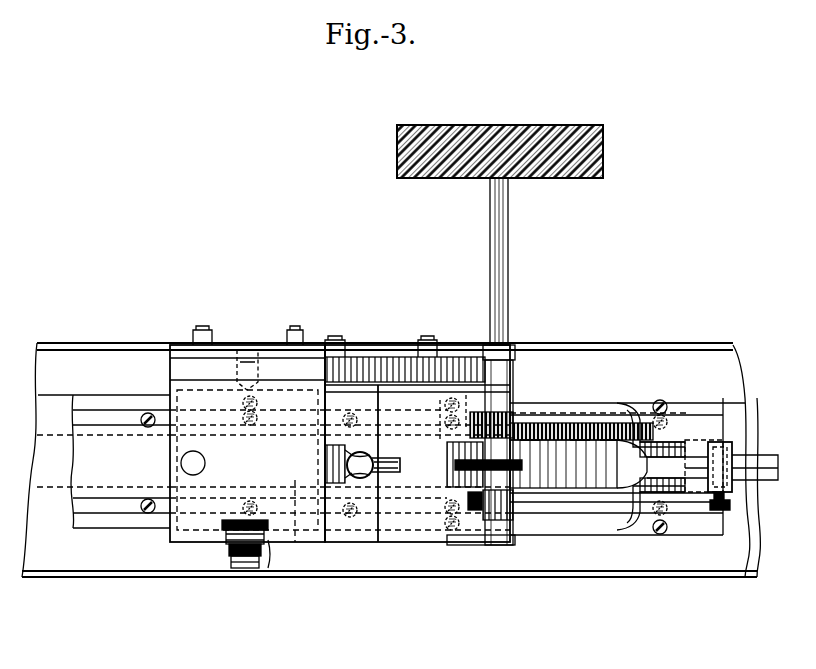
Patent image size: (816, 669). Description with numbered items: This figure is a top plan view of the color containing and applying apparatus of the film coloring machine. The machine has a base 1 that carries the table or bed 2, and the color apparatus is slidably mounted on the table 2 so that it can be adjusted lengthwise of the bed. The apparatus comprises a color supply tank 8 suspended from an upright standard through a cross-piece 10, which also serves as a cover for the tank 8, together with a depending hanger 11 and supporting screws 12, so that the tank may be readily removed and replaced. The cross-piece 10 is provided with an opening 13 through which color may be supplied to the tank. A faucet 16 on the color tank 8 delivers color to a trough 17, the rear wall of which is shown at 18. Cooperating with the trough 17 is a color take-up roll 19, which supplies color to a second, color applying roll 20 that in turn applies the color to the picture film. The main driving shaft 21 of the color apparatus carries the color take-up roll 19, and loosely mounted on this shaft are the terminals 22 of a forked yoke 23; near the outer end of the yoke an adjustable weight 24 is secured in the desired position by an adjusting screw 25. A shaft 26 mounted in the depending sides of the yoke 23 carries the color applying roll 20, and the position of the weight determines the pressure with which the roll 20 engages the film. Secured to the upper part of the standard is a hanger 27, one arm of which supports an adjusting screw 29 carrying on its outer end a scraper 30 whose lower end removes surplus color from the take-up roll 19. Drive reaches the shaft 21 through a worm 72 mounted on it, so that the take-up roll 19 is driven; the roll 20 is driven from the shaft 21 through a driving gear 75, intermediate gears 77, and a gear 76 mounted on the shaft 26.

The base 1 is at (82, 557).
The table 2 is at (113, 400).
The color supply tank 8 is at (300, 480).
The cross-piece 10 is at (202, 507).
The depending hanger 11 is at (270, 555).
The supporting screws 12 is at (246, 352).
The opening 13 is at (205, 465).
The faucet 16 is at (355, 480).
The trough 17 is at (428, 470).
The rear wall 18 is at (380, 520).
The color take-up roll 19 is at (465, 495).
The color applying roll 20 is at (578, 470).
The main driving shaft 21 is at (497, 258).
The terminals 22 is at (553, 428).
The forked yoke 23 is at (702, 470).
The adjustable weight 24 is at (727, 445).
The adjusting screw 25 is at (728, 512).
The shaft 26 is at (600, 482).
The hanger 27 is at (518, 400).
The adjusting screw 29 is at (476, 448).
The scraper 30 is at (450, 440).
The worm 72 is at (603, 155).
The driving gear 75 is at (530, 425).
The gear 76 is at (600, 425).
The intermediate gears 77 is at (581, 432).